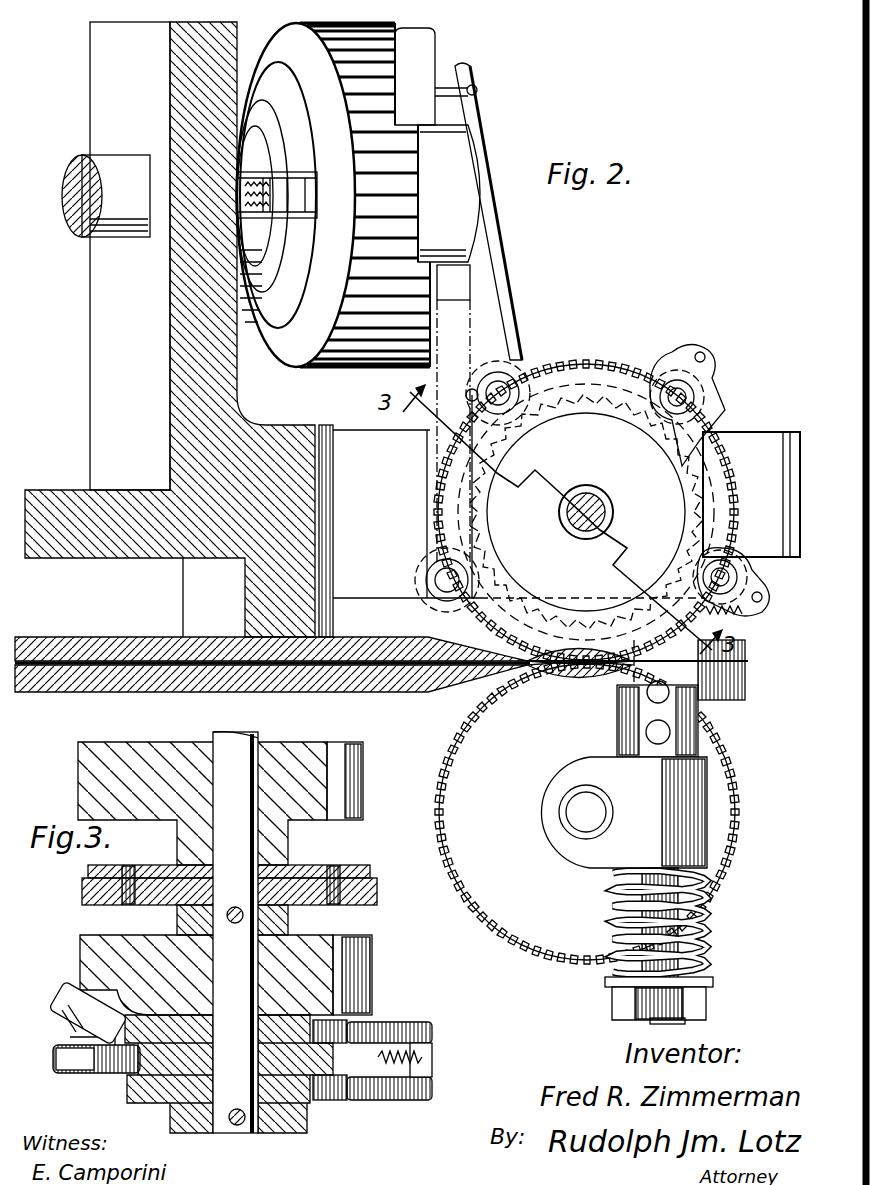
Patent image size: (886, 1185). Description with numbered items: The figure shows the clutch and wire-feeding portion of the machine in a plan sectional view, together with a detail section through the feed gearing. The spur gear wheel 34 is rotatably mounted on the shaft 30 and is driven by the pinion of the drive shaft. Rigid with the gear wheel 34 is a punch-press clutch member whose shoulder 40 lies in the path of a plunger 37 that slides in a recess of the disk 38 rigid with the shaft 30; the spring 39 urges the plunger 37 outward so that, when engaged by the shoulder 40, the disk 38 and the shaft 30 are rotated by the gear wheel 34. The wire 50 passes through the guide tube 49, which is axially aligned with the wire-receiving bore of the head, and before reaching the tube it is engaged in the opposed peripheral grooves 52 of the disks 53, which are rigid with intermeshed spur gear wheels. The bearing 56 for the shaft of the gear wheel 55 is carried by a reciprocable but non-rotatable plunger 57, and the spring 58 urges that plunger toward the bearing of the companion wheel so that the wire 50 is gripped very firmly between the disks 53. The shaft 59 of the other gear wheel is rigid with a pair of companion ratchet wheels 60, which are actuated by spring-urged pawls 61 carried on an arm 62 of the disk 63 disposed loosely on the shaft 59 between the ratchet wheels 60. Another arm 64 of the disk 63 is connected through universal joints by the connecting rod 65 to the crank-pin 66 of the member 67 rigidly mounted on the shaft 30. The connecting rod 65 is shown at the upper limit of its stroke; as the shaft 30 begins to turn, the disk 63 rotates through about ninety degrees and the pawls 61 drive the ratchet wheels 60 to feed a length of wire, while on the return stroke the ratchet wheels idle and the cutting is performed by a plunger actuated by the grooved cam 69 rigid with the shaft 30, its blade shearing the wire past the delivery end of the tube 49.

In FIG. 2, the shaft 30 is at (63, 195).
In FIG. 2, the spur gear wheel 34 is at (333, 195).
In FIG. 2, the plunger 37 is at (286, 180).
In FIG. 2, the disk 38 is at (280, 330).
In FIG. 2, the spring 39 is at (258, 186).
In FIG. 2, the shoulder 40 is at (265, 285).
In FIG. 2, the guide tube 49 is at (118, 637).
In FIG. 2, the wire 50 is at (748, 661).
In FIG. 3, the peripheral grooves 52 is at (377, 880).
In FIG. 2, the disks 53 is at (708, 440).
In FIG. 3, the disks 53 is at (302, 868).
In FIG. 2, the spur gear wheel 55 is at (728, 770).
In FIG. 2, the bearing 56 is at (538, 812).
In FIG. 2, the plunger 57 is at (692, 734).
In FIG. 2, the spring 58 is at (708, 934).
In FIG. 2, the shaft 59 is at (607, 506).
In FIG. 3, the shaft 59 is at (236, 1134).
In FIG. 2, the ratchet wheels 60 is at (592, 404).
In FIG. 3, the ratchet wheels 60 is at (333, 1022).
In FIG. 2, the pawls 61 is at (712, 392).
In FIG. 3, the pawls 61 is at (372, 1030).
In FIG. 2, the arm 62 is at (628, 382).
In FIG. 2, the disk 63 is at (552, 575).
In FIG. 3, the disk 63 is at (176, 1065).
In FIG. 2, the arm 64 is at (548, 392).
In FIG. 3, the arm 64 is at (90, 1072).
In FIG. 2, the connecting rod 65 is at (506, 248).
In FIG. 3, the connecting rod 65 is at (58, 1006).
In FIG. 2, the crank-pin 66 is at (480, 98).
In FIG. 2, the member 67 is at (458, 178).
In FIG. 2, the grooved cam 69 is at (470, 390).